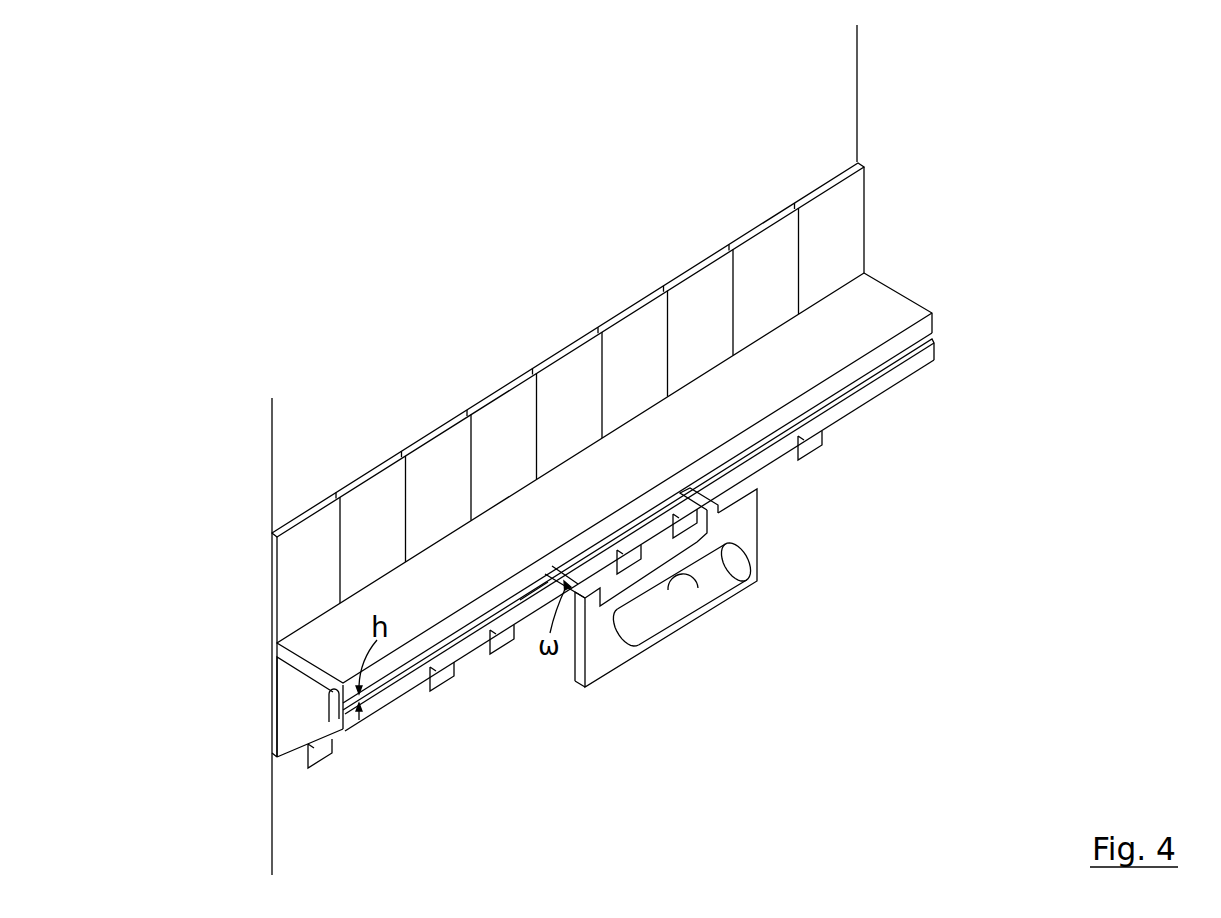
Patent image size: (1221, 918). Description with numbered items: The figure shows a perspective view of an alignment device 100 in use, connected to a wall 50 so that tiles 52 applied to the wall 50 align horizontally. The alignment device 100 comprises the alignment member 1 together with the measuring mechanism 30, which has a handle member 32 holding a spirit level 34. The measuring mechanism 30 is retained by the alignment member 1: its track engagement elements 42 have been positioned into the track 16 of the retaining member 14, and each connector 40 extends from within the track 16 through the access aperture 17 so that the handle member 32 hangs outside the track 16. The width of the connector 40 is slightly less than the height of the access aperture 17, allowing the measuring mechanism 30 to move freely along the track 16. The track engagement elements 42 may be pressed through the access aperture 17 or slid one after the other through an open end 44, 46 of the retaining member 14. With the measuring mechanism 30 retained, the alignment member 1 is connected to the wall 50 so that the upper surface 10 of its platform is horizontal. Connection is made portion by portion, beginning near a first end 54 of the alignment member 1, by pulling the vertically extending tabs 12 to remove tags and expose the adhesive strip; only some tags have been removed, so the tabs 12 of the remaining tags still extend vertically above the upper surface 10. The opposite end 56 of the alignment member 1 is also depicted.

The alignment member 1 is at (868, 302).
The upper surface 10 is at (783, 372).
The vertically extending tabs 12 is at (312, 768).
The retaining member 14 is at (393, 693).
The track 16 is at (332, 703).
The access aperture 17 is at (413, 668).
The measuring mechanism 30 is at (757, 548).
The handle member 32 is at (600, 652).
The spirit level 34 is at (663, 576).
The connectors 40 is at (748, 486).
The track engagement elements 42 is at (547, 584).
The open end 44 is at (337, 732).
The open end 46 is at (930, 340).
The wall 50 is at (292, 820).
The tiles 52 is at (828, 212).
The first end 54 is at (277, 650).
The seat end 56 is at (897, 287).
The alignment device 100 is at (930, 368).